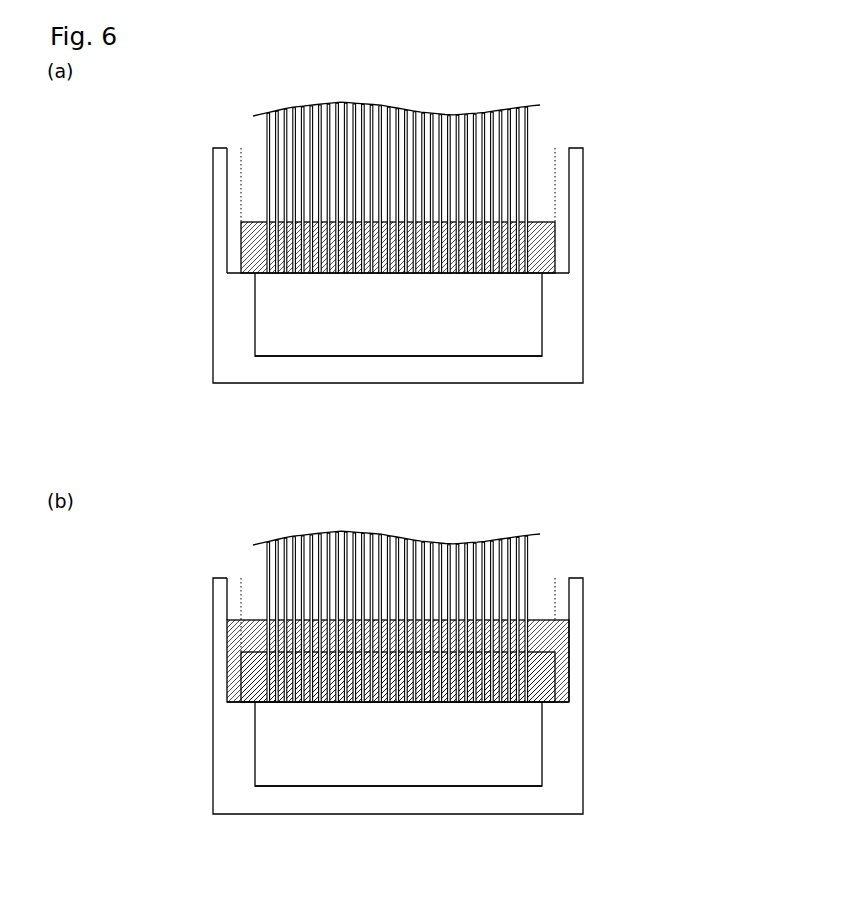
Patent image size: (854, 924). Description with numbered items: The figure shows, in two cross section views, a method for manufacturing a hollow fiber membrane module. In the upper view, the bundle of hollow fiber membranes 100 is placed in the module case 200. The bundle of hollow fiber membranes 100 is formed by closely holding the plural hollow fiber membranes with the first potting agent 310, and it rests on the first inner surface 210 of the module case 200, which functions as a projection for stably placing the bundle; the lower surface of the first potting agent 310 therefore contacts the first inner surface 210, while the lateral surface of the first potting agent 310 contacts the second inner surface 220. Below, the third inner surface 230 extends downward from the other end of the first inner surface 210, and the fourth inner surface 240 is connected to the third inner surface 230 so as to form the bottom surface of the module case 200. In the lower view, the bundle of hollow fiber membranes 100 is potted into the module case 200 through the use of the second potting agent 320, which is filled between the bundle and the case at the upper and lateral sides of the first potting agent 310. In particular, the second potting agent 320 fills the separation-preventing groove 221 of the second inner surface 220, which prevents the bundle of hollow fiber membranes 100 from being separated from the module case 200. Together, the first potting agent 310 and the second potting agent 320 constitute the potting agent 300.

The bundle of hollow fiber membranes 100 is at (530, 143).
The module case 200 is at (583, 238).
The first inner surface 210 is at (253, 272).
The second inner surface 220 is at (555, 165).
The separation-preventing groove 221 is at (236, 244).
The third inner surface 230 is at (255, 314).
The fourth inner surface 240 is at (399, 357).
The potting agent 300 is at (683, 648).
The first potting agent 310 is at (550, 264).
The second potting agent 320 is at (563, 695).